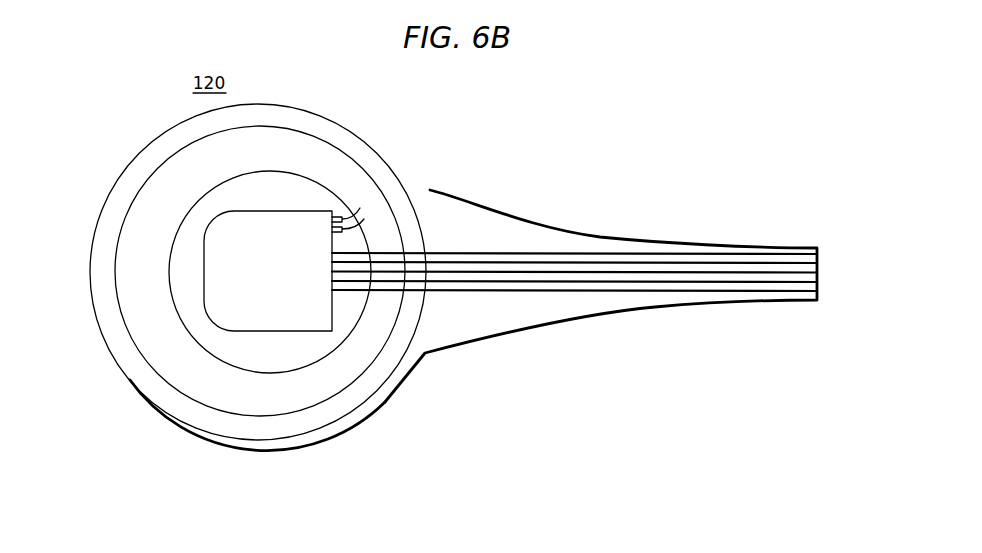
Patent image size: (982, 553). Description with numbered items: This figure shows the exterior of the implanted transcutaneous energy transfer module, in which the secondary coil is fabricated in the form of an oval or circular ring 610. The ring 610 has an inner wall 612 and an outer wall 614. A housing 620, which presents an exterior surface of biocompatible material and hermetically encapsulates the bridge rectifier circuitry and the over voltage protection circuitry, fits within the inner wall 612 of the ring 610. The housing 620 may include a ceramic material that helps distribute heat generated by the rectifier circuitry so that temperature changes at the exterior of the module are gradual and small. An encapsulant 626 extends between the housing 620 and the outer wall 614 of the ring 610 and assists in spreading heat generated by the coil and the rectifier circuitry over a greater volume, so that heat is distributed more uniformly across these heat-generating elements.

The ring 610 is at (397, 217).
The inner wall 612 is at (310, 185).
The outer wall 614 is at (393, 180).
The housing 620 is at (247, 323).
The encapsulant 626 is at (367, 135).